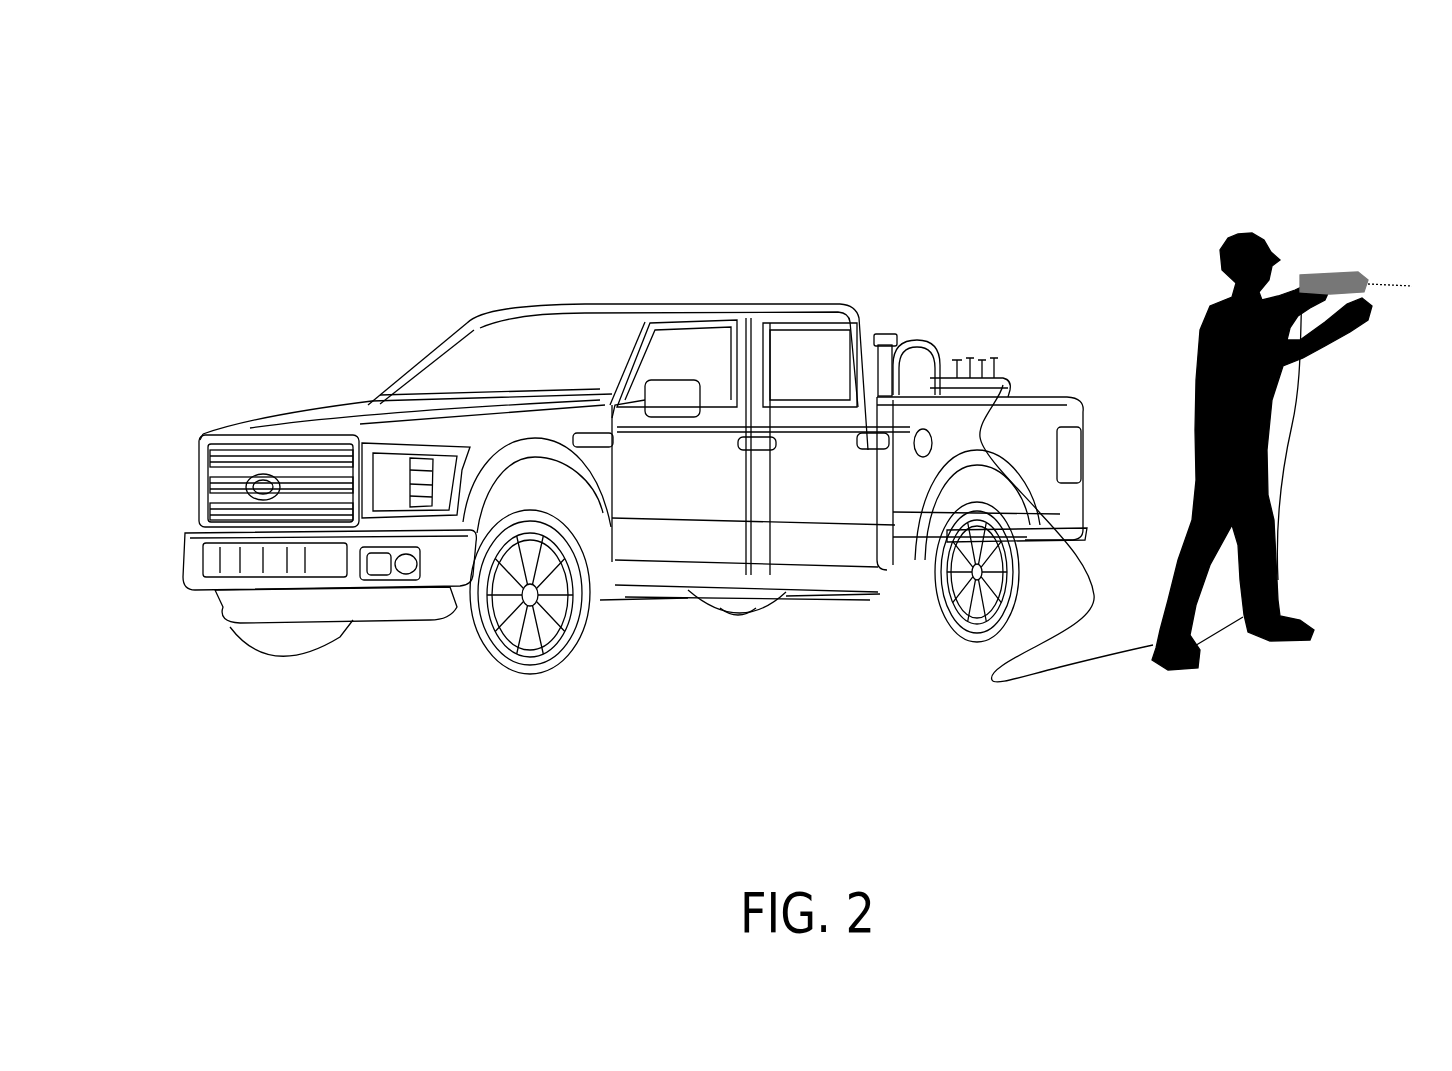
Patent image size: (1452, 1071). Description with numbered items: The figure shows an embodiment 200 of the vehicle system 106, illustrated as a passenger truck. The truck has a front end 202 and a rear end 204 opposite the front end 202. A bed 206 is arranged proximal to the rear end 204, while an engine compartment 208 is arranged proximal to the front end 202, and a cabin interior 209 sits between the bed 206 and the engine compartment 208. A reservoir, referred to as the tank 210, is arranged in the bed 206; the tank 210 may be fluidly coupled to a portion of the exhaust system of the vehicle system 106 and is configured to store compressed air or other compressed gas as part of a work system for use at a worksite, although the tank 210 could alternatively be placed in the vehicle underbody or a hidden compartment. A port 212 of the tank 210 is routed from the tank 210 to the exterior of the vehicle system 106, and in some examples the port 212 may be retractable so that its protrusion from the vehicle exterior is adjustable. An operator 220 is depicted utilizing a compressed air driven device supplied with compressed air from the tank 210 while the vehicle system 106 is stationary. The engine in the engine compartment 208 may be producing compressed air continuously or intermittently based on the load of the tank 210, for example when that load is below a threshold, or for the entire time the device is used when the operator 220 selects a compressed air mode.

The embodiment 200 is at (1335, 63).
The vehicle system 106 is at (262, 214).
The front end 202 is at (178, 412).
The rear end 204 is at (1085, 334).
The bed 206 is at (1024, 397).
The engine compartment 208 is at (330, 408).
The cabin interior 209 is at (577, 304).
The tank 210 is at (893, 340).
The port 212 is at (933, 383).
The operator 220 is at (1244, 233).